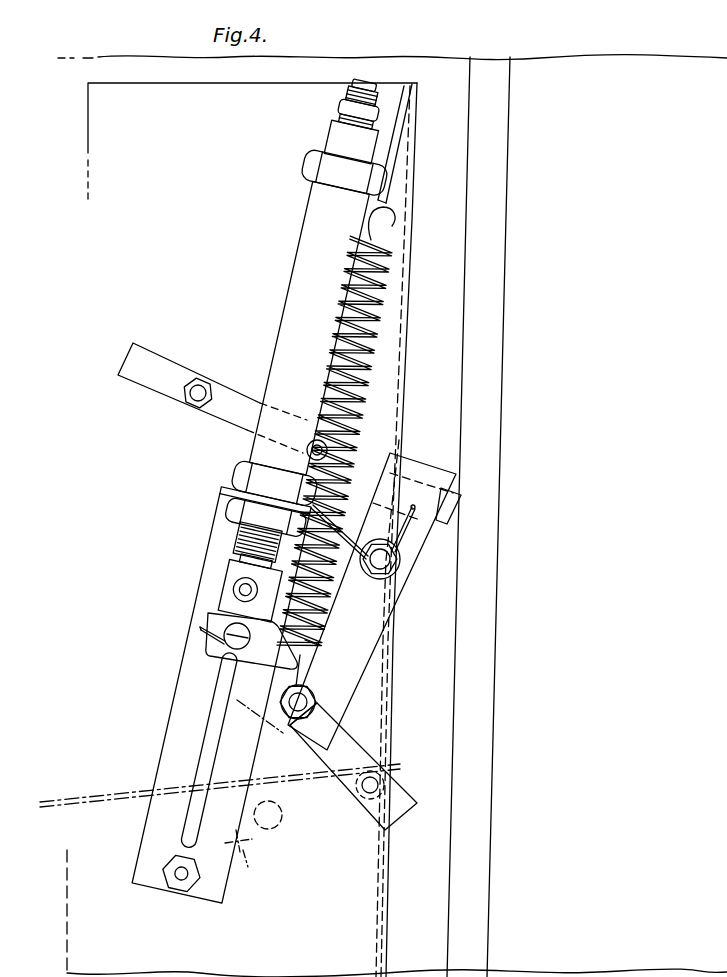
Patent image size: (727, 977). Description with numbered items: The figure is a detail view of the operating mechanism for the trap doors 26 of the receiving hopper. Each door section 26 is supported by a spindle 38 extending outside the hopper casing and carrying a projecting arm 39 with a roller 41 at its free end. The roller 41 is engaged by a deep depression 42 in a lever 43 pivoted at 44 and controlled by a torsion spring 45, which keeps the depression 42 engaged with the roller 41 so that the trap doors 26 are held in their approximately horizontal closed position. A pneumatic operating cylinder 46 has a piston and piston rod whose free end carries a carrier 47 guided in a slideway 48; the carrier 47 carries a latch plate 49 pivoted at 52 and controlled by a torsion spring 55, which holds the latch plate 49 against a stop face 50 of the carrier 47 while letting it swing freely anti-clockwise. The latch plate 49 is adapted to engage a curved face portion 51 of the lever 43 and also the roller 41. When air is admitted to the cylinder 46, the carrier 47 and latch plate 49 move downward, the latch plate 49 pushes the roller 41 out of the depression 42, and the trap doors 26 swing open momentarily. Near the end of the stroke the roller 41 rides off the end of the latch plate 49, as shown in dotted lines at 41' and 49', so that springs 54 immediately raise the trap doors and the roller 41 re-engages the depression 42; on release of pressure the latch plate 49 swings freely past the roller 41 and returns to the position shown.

The trap door 26 is at (309, 778).
The spindle 38 is at (380, 782).
The projecting arm 39 is at (382, 752).
The roller 41 is at (336, 704).
The roller (dotted-line position) 41' is at (286, 829).
The depression 42 is at (306, 686).
The lever 43 is at (376, 622).
The pivot 44 is at (399, 567).
The torsion spring 45 is at (363, 532).
The pneumatic operating cylinder 46 is at (293, 270).
The carrier 47 is at (248, 575).
The slideway 48 is at (180, 697).
The latch plate 49 is at (225, 749).
The latch plate (dotted-line position) 49' is at (260, 872).
The stop face 50 is at (228, 585).
The curved face portion 51 is at (317, 640).
The pivot 52 is at (222, 634).
The springs 54 is at (372, 342).
The torsion spring 55 is at (200, 631).